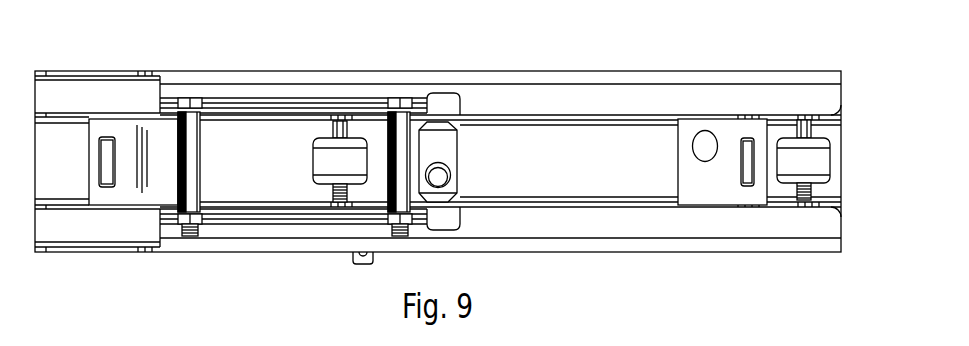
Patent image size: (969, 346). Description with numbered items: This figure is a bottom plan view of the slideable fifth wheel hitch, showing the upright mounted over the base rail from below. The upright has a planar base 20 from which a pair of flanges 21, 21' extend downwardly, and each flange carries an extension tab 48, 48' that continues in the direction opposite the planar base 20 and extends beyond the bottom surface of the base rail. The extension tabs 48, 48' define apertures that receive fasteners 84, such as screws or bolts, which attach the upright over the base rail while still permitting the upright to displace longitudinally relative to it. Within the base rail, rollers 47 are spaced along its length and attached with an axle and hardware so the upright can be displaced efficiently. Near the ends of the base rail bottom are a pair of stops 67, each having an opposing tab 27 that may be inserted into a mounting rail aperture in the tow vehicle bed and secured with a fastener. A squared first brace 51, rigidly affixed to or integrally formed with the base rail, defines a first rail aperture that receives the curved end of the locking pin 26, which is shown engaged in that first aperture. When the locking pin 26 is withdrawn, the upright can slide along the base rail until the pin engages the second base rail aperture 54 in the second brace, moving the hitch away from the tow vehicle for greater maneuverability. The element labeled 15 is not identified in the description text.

The planar base 20 is at (58, 64).
The flange 21 is at (438, 245).
The flange 21' is at (438, 64).
The mounting tab 15 is at (363, 266).
The locking pin 26 is at (443, 178).
The tab 27 is at (107, 166).
The roller 47 is at (321, 162).
The extension tab 48 is at (287, 205).
The extension tab 48' is at (209, 125).
The first brace 51 is at (447, 148).
The second base rail aperture 54 is at (699, 146).
The stop 67 is at (153, 192).
The fastener 84 is at (196, 147).